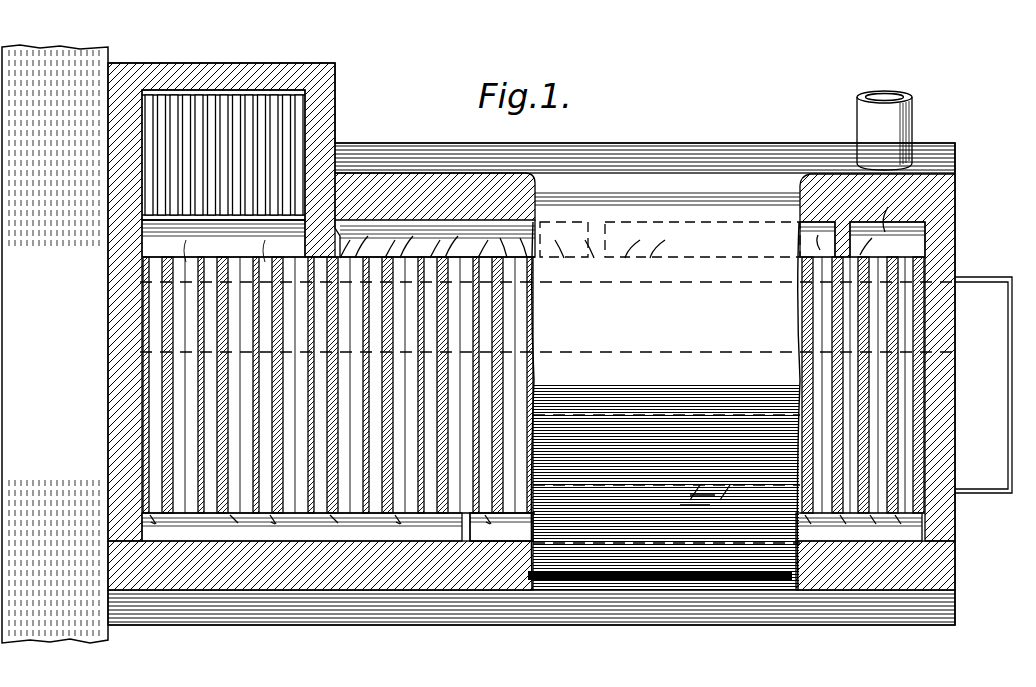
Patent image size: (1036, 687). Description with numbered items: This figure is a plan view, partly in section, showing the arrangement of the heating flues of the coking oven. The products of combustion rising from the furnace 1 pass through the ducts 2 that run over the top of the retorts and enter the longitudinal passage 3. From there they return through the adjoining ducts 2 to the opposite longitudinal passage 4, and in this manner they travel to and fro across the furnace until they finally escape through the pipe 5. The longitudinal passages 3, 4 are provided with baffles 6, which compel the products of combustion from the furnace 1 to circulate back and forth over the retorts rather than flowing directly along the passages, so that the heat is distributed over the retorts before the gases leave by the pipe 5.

The furnace 1 is at (240, 125).
The ducts 2 is at (150, 322).
The longitudinal passage 3 is at (338, 401).
The opposite longitudinal passage 4 is at (433, 243).
The pipe 5 is at (876, 107).
The baffles 6 is at (466, 524).